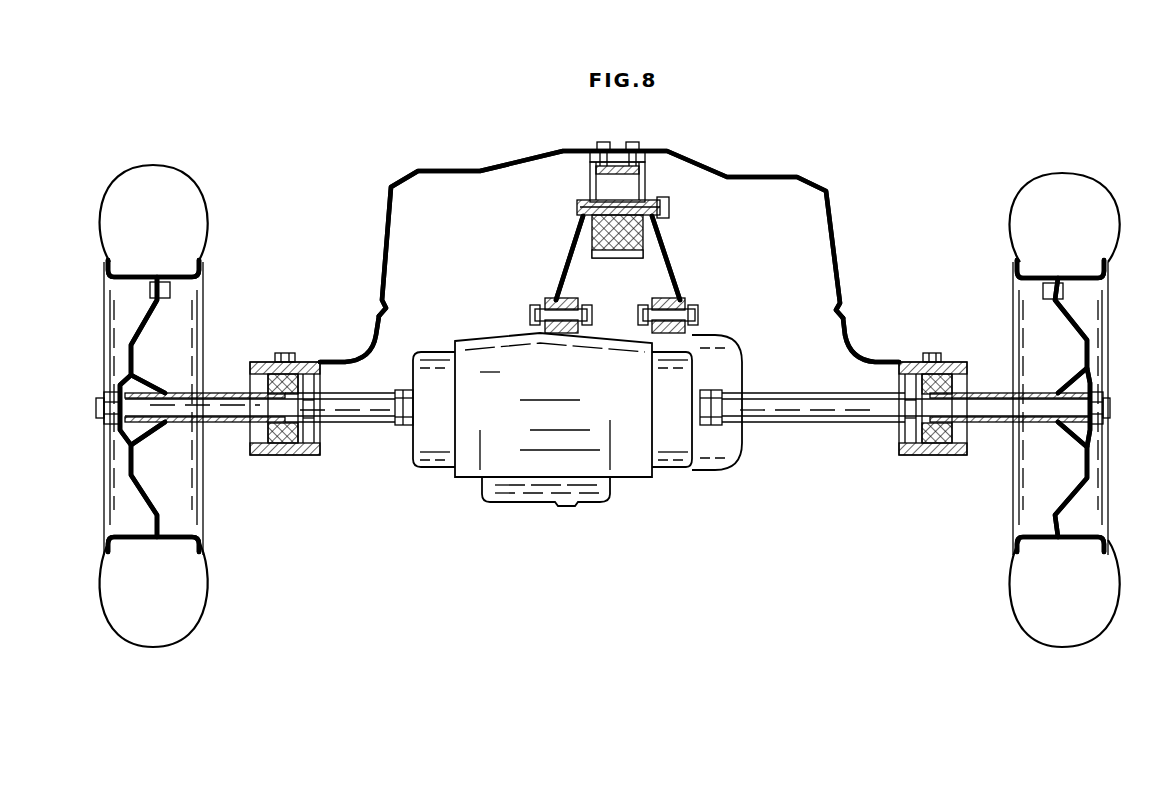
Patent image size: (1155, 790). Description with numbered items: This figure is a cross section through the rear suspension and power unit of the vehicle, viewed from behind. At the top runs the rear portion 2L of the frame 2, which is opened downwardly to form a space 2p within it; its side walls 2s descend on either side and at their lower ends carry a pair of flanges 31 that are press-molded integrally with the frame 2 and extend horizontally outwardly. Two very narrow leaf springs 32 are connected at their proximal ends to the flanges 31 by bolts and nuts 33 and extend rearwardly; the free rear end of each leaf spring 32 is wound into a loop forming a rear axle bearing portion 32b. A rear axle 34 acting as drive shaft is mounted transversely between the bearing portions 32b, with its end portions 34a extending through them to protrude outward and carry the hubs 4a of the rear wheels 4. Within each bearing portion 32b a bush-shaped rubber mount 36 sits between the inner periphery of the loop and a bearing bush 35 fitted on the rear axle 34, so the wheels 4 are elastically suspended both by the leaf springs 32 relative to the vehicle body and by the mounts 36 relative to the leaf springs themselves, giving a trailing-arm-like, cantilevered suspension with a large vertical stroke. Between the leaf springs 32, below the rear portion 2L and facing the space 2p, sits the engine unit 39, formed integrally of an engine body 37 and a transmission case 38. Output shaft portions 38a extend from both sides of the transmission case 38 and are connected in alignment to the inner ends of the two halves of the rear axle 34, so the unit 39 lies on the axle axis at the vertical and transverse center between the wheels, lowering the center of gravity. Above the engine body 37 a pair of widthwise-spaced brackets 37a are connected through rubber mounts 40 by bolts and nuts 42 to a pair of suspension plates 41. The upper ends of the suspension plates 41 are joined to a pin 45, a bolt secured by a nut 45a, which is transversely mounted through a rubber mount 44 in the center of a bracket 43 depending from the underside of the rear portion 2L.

The frame 2 is at (430, 172).
The side walls 2s is at (383, 242).
The rear portion 2L is at (830, 182).
The space 2p is at (815, 378).
The rear wheels 4 is at (195, 616).
The hubs 4a is at (125, 393).
The flanges 31 is at (336, 360).
The leaf springs 32 is at (611, 417).
The rear axle bearing portion 32b is at (282, 455).
The bolts and nuts 33 is at (285, 353).
The rear axle 34 is at (358, 406).
The end portions 34a is at (230, 410).
The bearing bush 35 is at (290, 397).
The rubber mount 36 is at (308, 440).
The engine body 37 is at (720, 348).
The brackets 37a is at (560, 298).
The transmission case 38 is at (590, 488).
The output shaft portions 38a is at (403, 425).
The engine unit 39 is at (507, 459).
The rubber mounts 40 is at (545, 332).
The suspension plates 41 is at (575, 255).
The bolts and nuts 42 is at (535, 312).
The bracket 43 is at (645, 178).
The rubber mount 44 is at (590, 215).
The pin 45 is at (648, 222).
The nut 45a is at (655, 200).